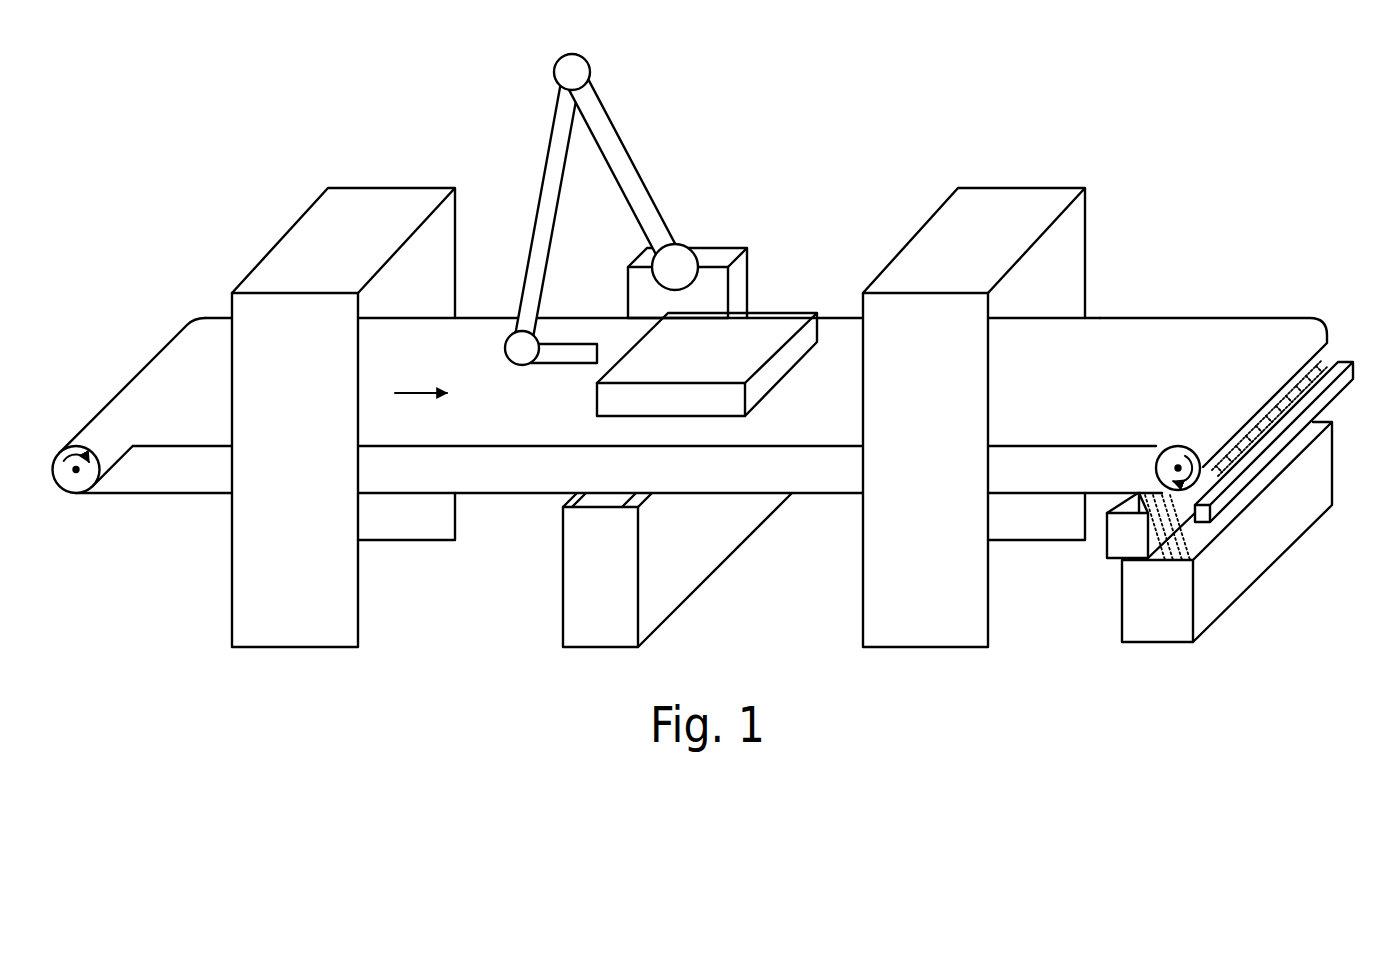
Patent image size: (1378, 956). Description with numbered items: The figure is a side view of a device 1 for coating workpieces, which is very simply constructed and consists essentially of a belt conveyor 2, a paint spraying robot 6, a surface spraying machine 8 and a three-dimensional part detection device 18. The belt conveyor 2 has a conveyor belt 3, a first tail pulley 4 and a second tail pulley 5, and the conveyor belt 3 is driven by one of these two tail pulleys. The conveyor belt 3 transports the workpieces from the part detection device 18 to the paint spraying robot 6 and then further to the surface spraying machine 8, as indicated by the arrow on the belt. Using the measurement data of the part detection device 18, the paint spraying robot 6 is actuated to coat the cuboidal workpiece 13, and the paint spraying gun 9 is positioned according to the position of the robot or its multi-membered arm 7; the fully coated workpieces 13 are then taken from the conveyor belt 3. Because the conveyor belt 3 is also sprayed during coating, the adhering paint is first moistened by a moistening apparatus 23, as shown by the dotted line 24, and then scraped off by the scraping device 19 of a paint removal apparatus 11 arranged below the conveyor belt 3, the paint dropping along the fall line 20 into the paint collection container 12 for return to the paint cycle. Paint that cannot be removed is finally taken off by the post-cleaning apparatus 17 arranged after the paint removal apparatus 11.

The device for coating workpieces 1 is at (210, 132).
The belt conveyor 2 is at (163, 372).
The conveyor belt 3 is at (1172, 335).
The first tail pulley 4 is at (70, 478).
The second tail pulley 5 is at (1180, 455).
The paint spraying robot 6 is at (718, 257).
The multi-membered arm 7 is at (593, 112).
The surface spraying machine 8 is at (904, 413).
The paint spraying gun 9 is at (560, 356).
The paint removal apparatus 11 is at (1113, 548).
The paint collection container 12 is at (1141, 615).
The workpiece 13 is at (687, 367).
The post-cleaning apparatus 17 is at (584, 592).
The 3D part detection device 18 is at (272, 411).
The scraping device 19 is at (1135, 503).
The fall line of the paint 20 is at (1192, 538).
The moistening apparatus 23 is at (1347, 360).
The dotted line 24 is at (1300, 368).